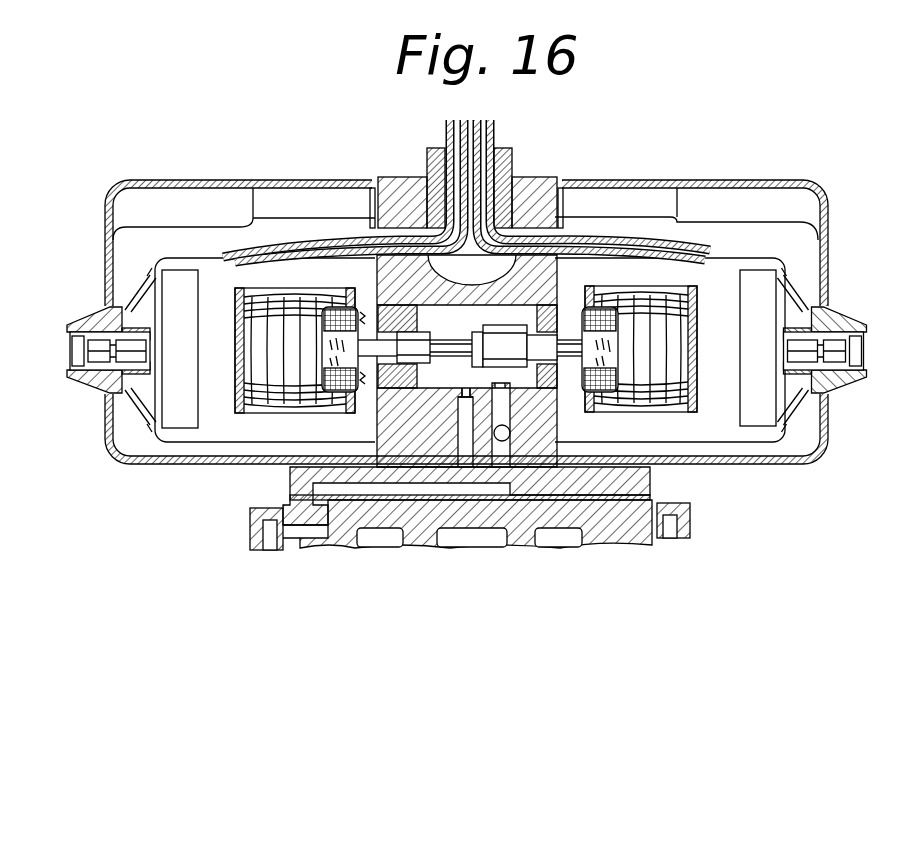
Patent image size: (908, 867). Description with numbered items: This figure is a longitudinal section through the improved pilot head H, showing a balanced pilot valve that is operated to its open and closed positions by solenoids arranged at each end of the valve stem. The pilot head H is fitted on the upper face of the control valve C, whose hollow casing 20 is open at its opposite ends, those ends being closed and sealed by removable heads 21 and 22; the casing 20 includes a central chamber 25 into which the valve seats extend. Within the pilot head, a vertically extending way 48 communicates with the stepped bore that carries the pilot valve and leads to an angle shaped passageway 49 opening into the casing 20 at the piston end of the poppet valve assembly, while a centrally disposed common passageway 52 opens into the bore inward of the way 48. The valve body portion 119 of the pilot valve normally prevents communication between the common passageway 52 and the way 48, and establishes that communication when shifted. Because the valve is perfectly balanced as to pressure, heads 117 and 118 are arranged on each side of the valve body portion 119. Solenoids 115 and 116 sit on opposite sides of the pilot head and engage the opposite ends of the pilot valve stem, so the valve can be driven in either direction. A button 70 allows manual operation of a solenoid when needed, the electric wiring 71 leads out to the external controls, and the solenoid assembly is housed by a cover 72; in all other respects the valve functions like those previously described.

The pilot head H is at (546, 176).
The hollow casing 20 is at (640, 512).
The removable head 21 is at (250, 539).
The removable head 22 is at (690, 525).
The central chamber 25 is at (445, 540).
The vertically extending way 48 is at (468, 480).
The angle shaped passageway 49 is at (292, 491).
The common passageway 52 is at (500, 500).
The button 70 is at (68, 358).
The electric wiring 71 is at (349, 236).
The cover 72 is at (160, 460).
The solenoid 115 is at (285, 290).
The solenoid 116 is at (634, 288).
The head 117 is at (400, 392).
The head 118 is at (548, 400).
The valve body portion 119 is at (480, 330).
The control valve C is at (248, 523).